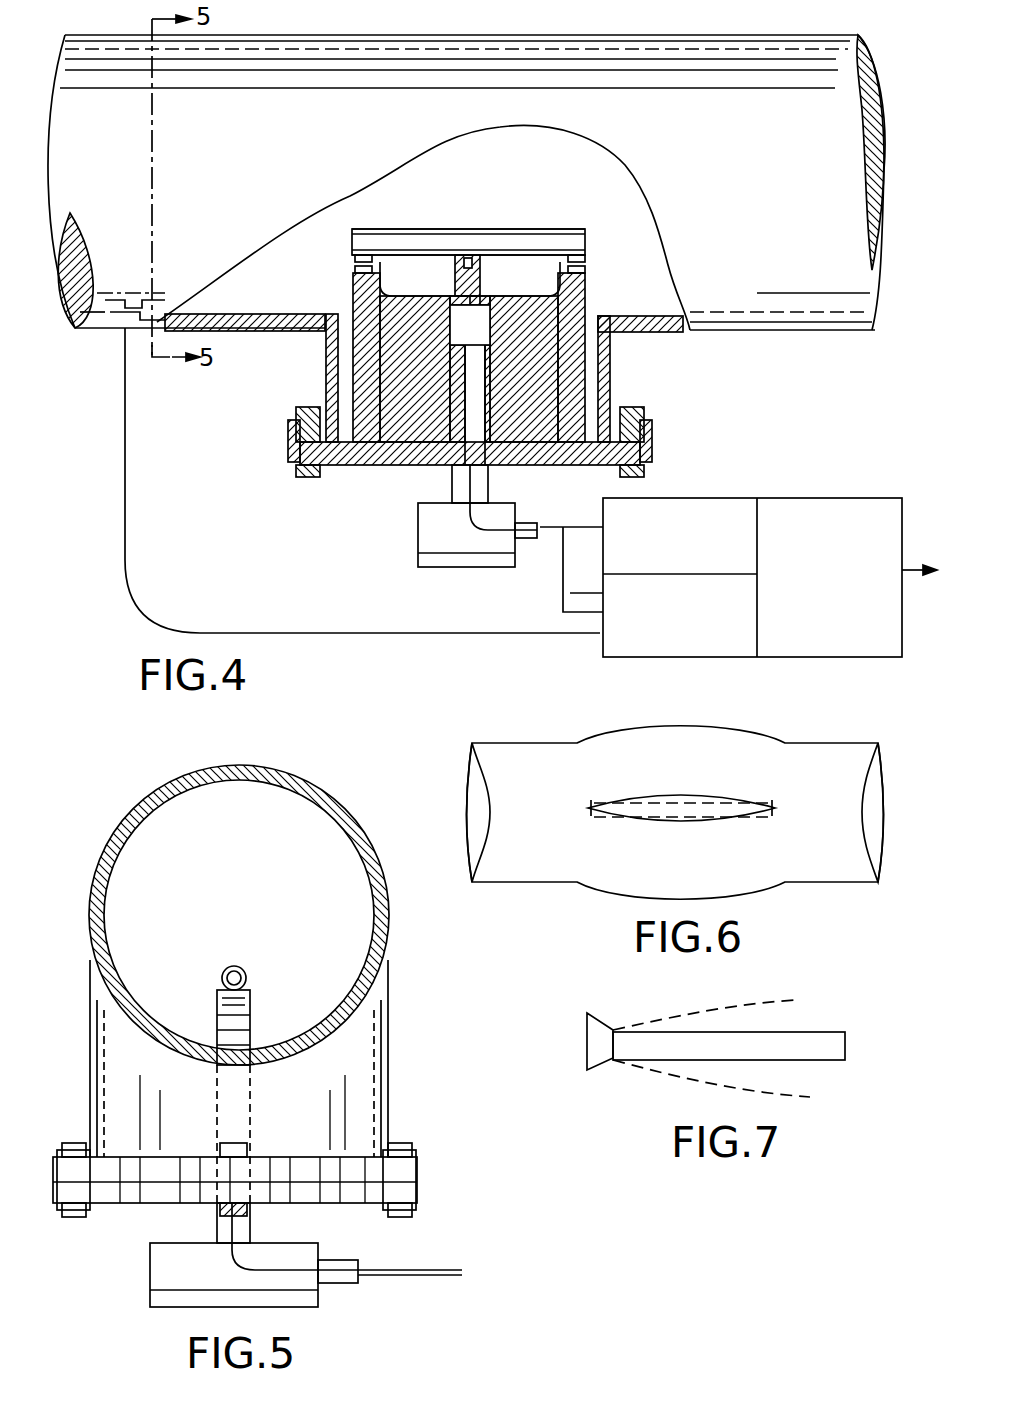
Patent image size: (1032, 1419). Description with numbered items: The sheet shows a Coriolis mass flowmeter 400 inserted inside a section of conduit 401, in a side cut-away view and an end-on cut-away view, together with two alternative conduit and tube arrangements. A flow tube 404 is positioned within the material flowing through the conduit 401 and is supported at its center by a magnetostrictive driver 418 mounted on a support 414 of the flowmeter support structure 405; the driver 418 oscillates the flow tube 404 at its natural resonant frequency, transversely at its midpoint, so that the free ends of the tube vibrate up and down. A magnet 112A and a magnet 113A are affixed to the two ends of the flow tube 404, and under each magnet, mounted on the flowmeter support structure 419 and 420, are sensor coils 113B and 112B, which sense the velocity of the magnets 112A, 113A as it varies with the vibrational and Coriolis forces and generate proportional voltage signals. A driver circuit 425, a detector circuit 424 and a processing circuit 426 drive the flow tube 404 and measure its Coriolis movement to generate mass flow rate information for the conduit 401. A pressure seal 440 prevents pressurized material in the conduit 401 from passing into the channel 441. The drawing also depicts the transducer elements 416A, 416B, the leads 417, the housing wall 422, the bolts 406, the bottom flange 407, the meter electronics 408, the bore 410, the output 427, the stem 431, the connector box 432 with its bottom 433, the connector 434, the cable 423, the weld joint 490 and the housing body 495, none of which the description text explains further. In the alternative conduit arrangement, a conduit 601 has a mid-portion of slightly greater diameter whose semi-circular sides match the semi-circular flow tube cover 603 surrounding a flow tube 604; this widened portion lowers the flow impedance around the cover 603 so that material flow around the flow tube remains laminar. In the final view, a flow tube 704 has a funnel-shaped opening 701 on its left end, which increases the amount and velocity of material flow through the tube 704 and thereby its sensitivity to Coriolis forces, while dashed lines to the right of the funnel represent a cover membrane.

In FIG. 4, the mass flowmeter 400 is at (498, 176).
In FIG. 4, the conduit 401 is at (784, 178).
In FIG. 5, the conduit 401 is at (255, 770).
In FIG. 4, the flow tube 404 is at (505, 230).
In FIG. 5, the flow tube 404 is at (240, 967).
In FIG. 4, the flowmeter support structure 405 is at (463, 378).
In FIG. 5, the flowmeter support structure 405 is at (235, 1115).
In FIG. 4, the bolts 406 is at (648, 441).
In FIG. 4, the bottom flange 407 is at (400, 450).
In FIG. 4, the meter electronics 408 is at (737, 529).
In FIG. 4, the bore 410 is at (490, 405).
In FIG. 4, the support 414 is at (488, 262).
In FIG. 4, the transmitting transducer element 416A is at (320, 236).
In FIG. 4, the receiving transducer element 416B is at (502, 651).
In FIG. 4, the lead wire 417 is at (568, 240).
In FIG. 4, the magnetostrictive driver 418 is at (400, 236).
In FIG. 4, the flowmeter support structure 419 is at (330, 325).
In FIG. 5, the flowmeter support structure 419 is at (240, 1030).
In FIG. 4, the flowmeter support structure 420 is at (580, 290).
In FIG. 4, the housing wall 422 is at (327, 398).
In FIG. 4, the cable 423 is at (470, 568).
In FIG. 5, the cable 423 is at (395, 1275).
In FIG. 4, the detector circuit 424 is at (625, 650).
In FIG. 4, the driver circuit 425 is at (690, 506).
In FIG. 4, the processing circuit 426 is at (846, 650).
In FIG. 4, the output 427 is at (902, 565).
In FIG. 4, the stem 431 is at (450, 490).
In FIG. 5, the stem 431 is at (217, 1222).
In FIG. 4, the connector box 432 is at (418, 530).
In FIG. 5, the connector box 432 is at (150, 1290).
In FIG. 4, the box bottom 433 is at (440, 562).
In FIG. 5, the box bottom 433 is at (150, 1303).
In FIG. 4, the connector 434 is at (530, 523).
In FIG. 5, the connector 434 is at (345, 1260).
In FIG. 4, the pressure seal 440 is at (455, 360).
In FIG. 4, the channel 441 is at (465, 400).
In FIG. 4, the weld joint 490 is at (140, 293).
In FIG. 4, the housing body 495 is at (405, 632).
In FIG. 4, the magnet 112A is at (595, 255).
In FIG. 4, the sensor coil 112B is at (595, 268).
In FIG. 4, the magnet 113A is at (372, 258).
In FIG. 4, the sensor coil 113B is at (372, 270).
In FIG. 6, the conduit 601 is at (790, 742).
In FIG. 6, the flow tube cover 603 is at (700, 790).
In FIG. 6, the flow tube 604 is at (735, 805).
In FIG. 7, the funnel-shaped opening 701 is at (606, 1062).
In FIG. 7, the flow tube 704 is at (800, 1045).